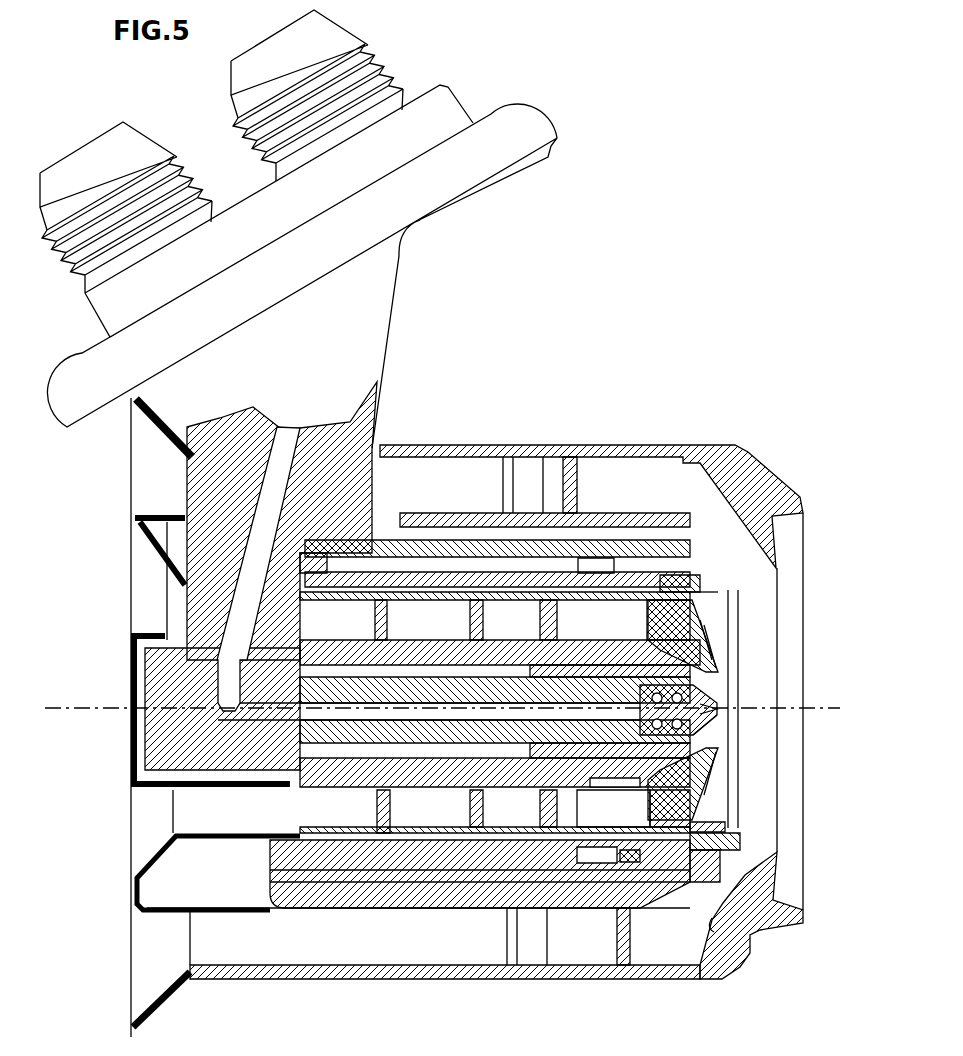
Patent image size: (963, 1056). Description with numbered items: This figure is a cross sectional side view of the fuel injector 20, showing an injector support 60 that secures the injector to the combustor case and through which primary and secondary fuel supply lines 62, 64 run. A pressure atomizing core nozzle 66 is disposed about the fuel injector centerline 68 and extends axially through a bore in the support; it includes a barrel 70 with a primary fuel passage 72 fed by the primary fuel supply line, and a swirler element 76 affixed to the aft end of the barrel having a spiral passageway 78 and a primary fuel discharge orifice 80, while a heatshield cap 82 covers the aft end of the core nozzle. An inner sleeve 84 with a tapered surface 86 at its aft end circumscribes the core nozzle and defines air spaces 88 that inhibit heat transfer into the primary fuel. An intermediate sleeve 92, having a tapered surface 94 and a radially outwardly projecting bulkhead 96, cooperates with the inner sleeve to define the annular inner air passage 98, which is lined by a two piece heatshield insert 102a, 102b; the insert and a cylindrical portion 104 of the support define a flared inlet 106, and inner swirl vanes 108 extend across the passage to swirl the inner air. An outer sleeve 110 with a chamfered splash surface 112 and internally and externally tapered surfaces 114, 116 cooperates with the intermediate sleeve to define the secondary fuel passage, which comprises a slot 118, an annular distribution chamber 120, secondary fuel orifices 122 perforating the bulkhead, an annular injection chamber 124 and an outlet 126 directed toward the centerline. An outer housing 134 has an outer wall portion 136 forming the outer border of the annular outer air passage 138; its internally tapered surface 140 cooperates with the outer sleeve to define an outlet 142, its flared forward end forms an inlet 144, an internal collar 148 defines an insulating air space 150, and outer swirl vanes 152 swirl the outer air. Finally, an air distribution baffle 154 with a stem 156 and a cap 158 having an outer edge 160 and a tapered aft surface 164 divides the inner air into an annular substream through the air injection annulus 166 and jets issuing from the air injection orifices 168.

The fuel injector 20 is at (700, 405).
The injector support 60 is at (318, 340).
The primary fuel supply line 62 is at (266, 562).
The secondary fuel supply line 64 is at (339, 515).
The pressure atomizing core nozzle 66 is at (118, 677).
The fuel injector centerline 68 is at (97, 706).
The barrel 70 is at (150, 753).
The primary fuel passage 72 is at (465, 722).
The swirler element 76 is at (707, 693).
The spiral passageway 78 is at (650, 700).
The primary fuel discharge orifice 80 is at (717, 712).
The heatshield cap 82 is at (132, 730).
The inner sleeve 84 is at (427, 770).
The tapered surface 86 is at (713, 733).
The air spaces 88 is at (490, 752).
The intermediate sleeve 92 is at (445, 574).
The tapered surface 94 is at (720, 853).
The bulkhead 96 is at (620, 857).
The annular inner air passage 98 is at (353, 818).
The heatshield insert piece 102a is at (467, 827).
The heatshield insert piece 102b is at (250, 833).
The cylindrical portion 104 is at (177, 630).
The inlet 106 is at (145, 582).
The inner swirl vanes 108 is at (500, 628).
The outer sleeve 110 is at (507, 880).
The chamfered splash surface 112 is at (652, 560).
The internally tapered surface 114 is at (720, 827).
The externally tapered surface 116 is at (722, 857).
The slot 118 is at (497, 554).
The annular distribution chamber 120 is at (582, 572).
The secondary fuel orifices 122 is at (630, 570).
The annular injection chamber 124 is at (680, 573).
The outlet 126 is at (720, 600).
The outer housing 134 is at (717, 967).
The outer wall portion 136 is at (600, 973).
The annular outer air passage 138 is at (243, 950).
The internally tapered surface 140 is at (737, 927).
The outlet 142 is at (707, 513).
The inlet 144 is at (150, 977).
The internal collar 148 is at (570, 900).
The air space 150 is at (577, 540).
The outer swirl vanes 152 is at (550, 960).
The air distribution baffle 154 is at (700, 607).
The stem 156 is at (630, 635).
The cap 158 is at (700, 627).
The outer edge 160 is at (690, 587).
The tapered aft surface 164 is at (700, 800).
The air injection annulus 166 is at (640, 818).
The air injection orifices 168 is at (710, 637).